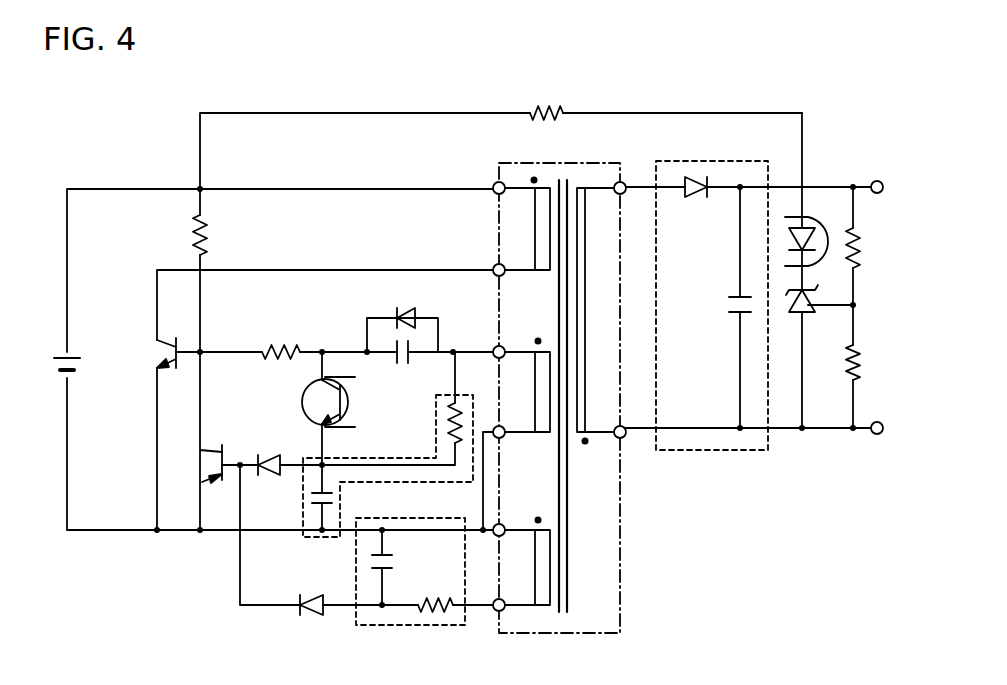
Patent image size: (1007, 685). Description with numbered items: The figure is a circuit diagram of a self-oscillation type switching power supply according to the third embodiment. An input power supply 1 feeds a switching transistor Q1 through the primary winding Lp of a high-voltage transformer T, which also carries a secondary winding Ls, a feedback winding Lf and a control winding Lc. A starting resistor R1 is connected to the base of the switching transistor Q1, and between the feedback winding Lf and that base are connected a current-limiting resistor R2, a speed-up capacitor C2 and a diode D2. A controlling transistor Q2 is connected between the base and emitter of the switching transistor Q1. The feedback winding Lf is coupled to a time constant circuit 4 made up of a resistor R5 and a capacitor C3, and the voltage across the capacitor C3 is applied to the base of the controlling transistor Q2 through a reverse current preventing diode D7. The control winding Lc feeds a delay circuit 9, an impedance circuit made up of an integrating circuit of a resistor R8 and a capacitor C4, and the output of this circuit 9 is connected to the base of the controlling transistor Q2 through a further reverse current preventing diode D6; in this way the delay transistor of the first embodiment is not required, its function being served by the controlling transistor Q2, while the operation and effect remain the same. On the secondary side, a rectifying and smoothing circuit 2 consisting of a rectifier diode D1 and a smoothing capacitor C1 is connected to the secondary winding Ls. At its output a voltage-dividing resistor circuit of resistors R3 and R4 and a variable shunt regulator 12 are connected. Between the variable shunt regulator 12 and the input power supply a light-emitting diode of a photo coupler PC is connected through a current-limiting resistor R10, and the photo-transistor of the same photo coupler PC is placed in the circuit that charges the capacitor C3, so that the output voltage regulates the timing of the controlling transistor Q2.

The input power supply 1 is at (80, 366).
The rectifying and smoothing circuit 2 is at (768, 162).
The time constant circuit 4 is at (387, 458).
The delay circuit 9 is at (438, 518).
The variable shunt regulator 12 is at (790, 316).
The starting resistor R1 is at (216, 235).
The current-limiting resistor R2 is at (281, 339).
The voltage-dividing resistor R3 is at (870, 248).
The voltage-dividing resistor R4 is at (870, 362).
The resistor R5 is at (438, 423).
The resistor R8 is at (435, 594).
The current-limiting resistor R10 is at (549, 100).
The smoothing capacitor C1 is at (728, 308).
The speed-up capacitor C2 is at (406, 365).
The capacitor C3 is at (338, 501).
The capacitor C4 is at (397, 563).
The rectifier diode D1 is at (699, 202).
The diode D2 is at (406, 304).
The reverse current preventing diode D6 is at (312, 621).
The reverse current preventing diode D7 is at (267, 453).
The switching transistor Q1 is at (166, 352).
The controlling transistor Q2 is at (217, 453).
The photo coupler PC is at (303, 402).
The high-voltage transformer T is at (553, 163).
The primary winding Lp is at (527, 224).
The secondary winding Ls is at (595, 316).
The feedback winding Lf is at (527, 385).
The control winding Lc is at (527, 561).